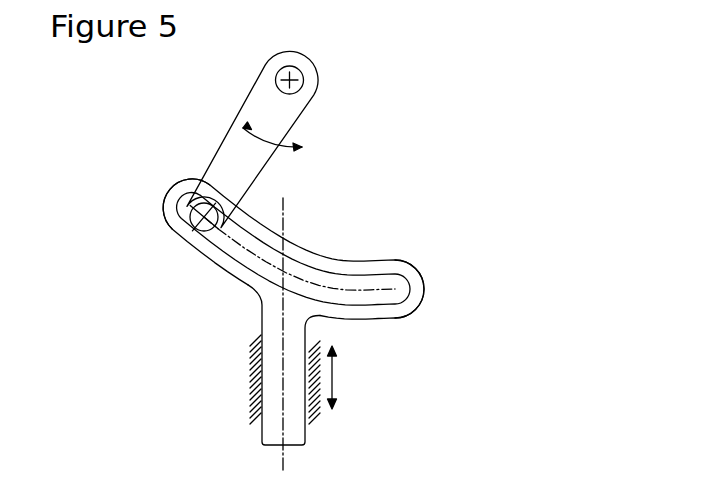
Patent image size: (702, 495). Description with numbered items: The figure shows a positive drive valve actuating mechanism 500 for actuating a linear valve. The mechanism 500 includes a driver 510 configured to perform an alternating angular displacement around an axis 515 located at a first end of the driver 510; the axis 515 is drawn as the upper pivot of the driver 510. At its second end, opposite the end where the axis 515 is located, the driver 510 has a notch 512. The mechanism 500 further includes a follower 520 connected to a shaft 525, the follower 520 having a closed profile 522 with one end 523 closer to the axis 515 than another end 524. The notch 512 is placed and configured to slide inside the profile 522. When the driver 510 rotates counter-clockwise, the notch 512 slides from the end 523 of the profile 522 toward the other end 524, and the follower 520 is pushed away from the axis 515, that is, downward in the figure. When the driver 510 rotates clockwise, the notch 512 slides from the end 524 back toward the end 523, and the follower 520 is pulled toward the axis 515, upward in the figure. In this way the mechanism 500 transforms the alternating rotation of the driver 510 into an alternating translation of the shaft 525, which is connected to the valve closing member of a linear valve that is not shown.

The positive drive valve actuating mechanism 500 is at (467, 54).
The driver 510 is at (310, 101).
The notch 512 is at (195, 228).
The axis 515 is at (302, 74).
The follower 520 is at (409, 304).
The closed profile 522 is at (392, 270).
The end of the profile 523 is at (164, 196).
The other end of the profile 524 is at (421, 275).
The shaft 525 is at (306, 444).